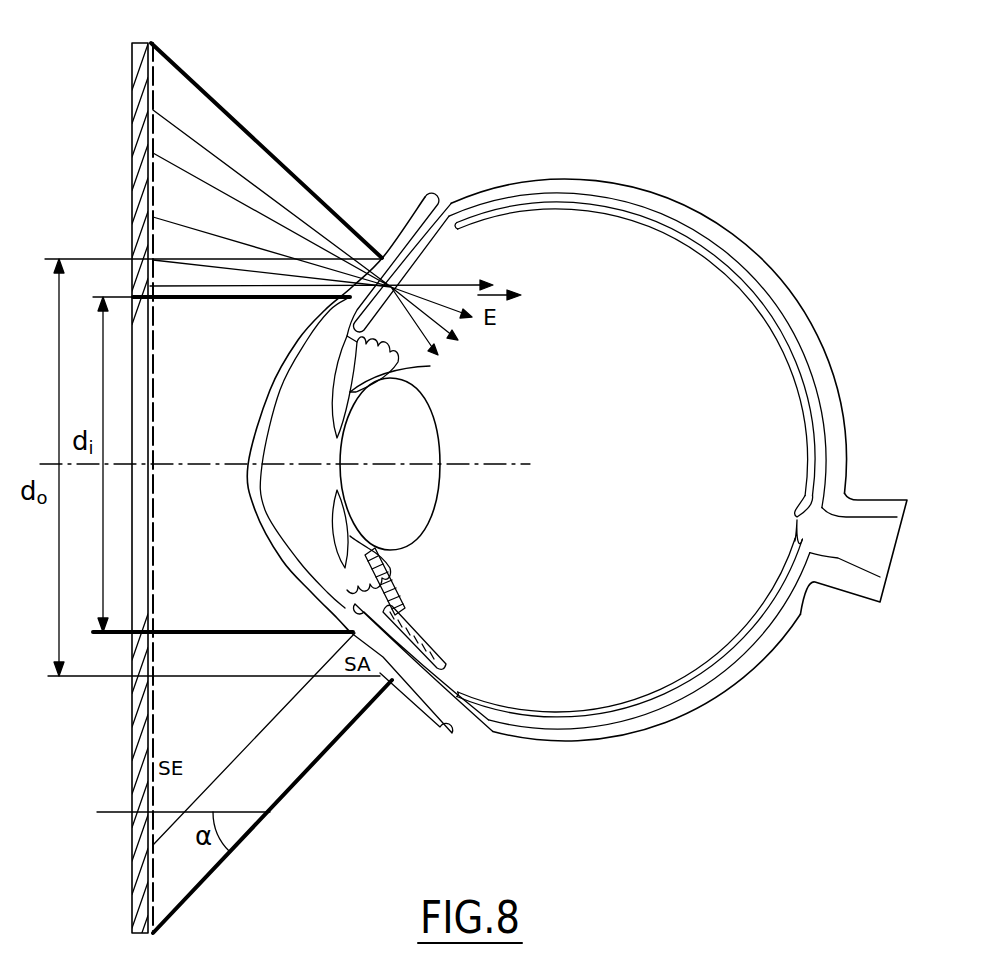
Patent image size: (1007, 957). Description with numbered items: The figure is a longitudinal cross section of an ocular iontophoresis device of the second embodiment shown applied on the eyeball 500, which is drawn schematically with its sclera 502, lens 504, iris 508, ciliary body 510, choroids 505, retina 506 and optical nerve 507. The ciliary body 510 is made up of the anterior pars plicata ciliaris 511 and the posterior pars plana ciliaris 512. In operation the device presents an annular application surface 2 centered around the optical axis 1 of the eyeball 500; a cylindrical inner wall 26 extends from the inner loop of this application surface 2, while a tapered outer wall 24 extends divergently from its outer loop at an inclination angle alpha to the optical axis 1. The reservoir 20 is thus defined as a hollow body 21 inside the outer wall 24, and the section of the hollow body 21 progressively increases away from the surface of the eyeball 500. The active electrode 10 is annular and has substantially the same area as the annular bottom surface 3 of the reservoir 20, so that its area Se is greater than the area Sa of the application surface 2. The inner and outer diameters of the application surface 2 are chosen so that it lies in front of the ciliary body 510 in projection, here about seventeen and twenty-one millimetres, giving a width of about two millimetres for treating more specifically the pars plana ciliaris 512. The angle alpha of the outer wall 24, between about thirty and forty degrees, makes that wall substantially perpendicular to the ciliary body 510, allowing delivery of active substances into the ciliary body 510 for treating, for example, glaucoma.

The optical axis 1 is at (530, 462).
The application surface 2 is at (357, 247).
The annular bottom surface 3 is at (150, 110).
The active electrode 10 is at (140, 138).
The reservoir 20 is at (284, 150).
The hollow body 21 is at (230, 183).
The outer wall 24 is at (268, 812).
The inner wall 26 is at (220, 630).
The eyeball 500 is at (752, 236).
The sclera 502 is at (604, 750).
The lens 504 is at (405, 458).
The choroids 505 is at (662, 702).
The retina 506 is at (720, 657).
The optical nerve 507 is at (855, 537).
The iris 508 is at (350, 392).
The ciliary body 510 is at (405, 604).
The anterior pars plicata ciliaris 511 is at (392, 562).
The posterior pars plana ciliaris 512 is at (440, 662).